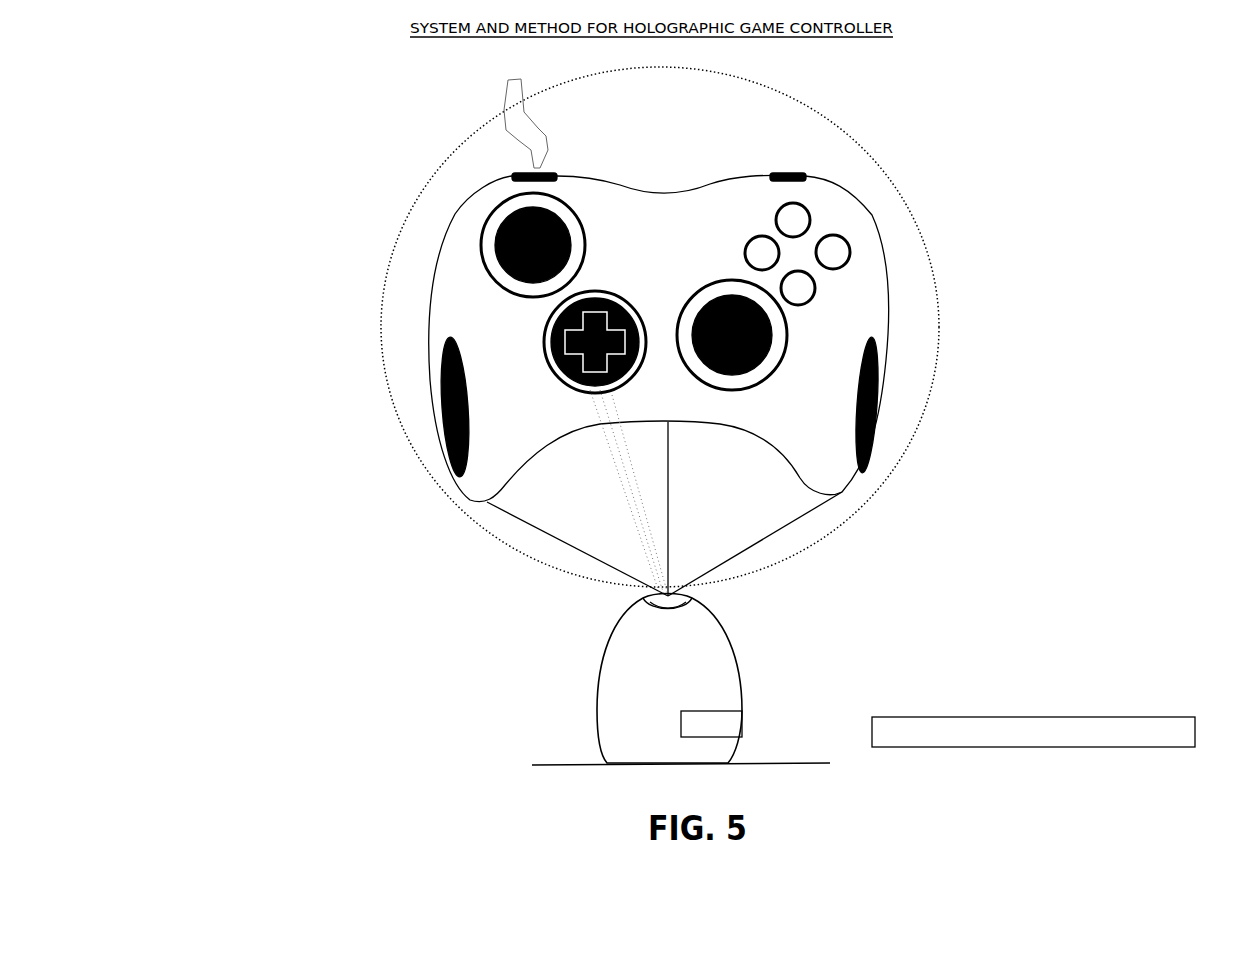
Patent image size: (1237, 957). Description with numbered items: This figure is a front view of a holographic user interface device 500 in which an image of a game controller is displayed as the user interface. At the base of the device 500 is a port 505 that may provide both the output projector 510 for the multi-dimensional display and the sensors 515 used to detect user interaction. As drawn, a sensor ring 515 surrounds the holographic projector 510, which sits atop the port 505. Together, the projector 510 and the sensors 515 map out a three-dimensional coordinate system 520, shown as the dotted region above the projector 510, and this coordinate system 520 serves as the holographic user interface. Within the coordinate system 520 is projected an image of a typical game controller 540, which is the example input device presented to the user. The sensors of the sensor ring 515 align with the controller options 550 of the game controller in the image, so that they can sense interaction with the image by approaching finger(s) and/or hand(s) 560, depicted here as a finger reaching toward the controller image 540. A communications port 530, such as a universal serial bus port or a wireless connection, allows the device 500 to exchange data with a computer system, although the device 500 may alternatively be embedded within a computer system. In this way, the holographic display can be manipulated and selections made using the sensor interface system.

The holographic user interface device 500 is at (902, 563).
The port 505 is at (597, 688).
The holographic projector 510 is at (728, 639).
The sensor ring 515 is at (647, 605).
The 3-D coordinate system 520 is at (892, 192).
The communications port 530 is at (742, 733).
The image of a game controller 540 is at (863, 252).
The controller options 550 is at (560, 298).
The approaching finger(s) and/or hand(s) 560 is at (610, 154).